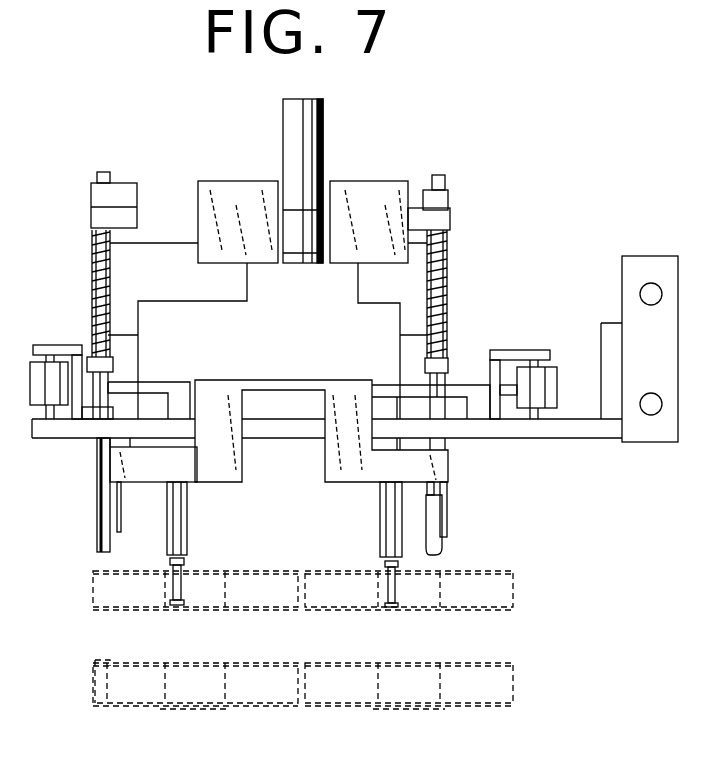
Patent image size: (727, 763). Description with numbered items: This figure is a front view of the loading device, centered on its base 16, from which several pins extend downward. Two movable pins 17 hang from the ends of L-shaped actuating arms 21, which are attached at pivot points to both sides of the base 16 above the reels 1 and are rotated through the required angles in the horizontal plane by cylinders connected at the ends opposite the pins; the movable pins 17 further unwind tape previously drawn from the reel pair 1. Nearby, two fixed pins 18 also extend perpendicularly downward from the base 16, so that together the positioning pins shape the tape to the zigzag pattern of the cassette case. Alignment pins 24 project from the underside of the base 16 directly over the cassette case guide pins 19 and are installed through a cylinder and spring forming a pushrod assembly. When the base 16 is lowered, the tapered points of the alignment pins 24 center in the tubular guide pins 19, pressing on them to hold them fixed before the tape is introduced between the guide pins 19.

The reel pair 1 is at (248, 608).
The base 16 is at (575, 440).
The movable pins 17 is at (182, 565).
The fixed pins 18 is at (120, 512).
The guide pins 19 is at (97, 683).
The actuating arms 21 is at (166, 386).
The alignment pins 24 is at (97, 488).